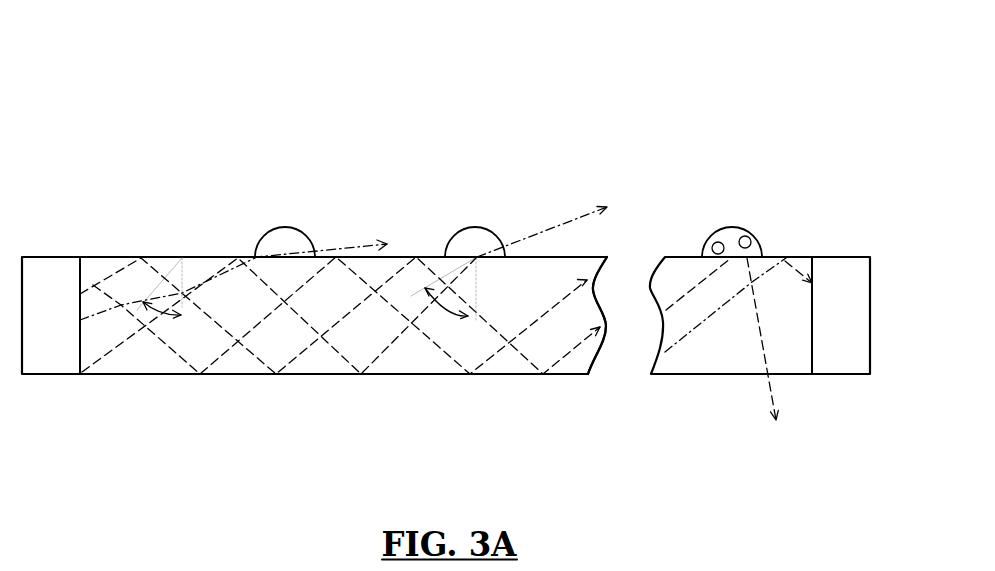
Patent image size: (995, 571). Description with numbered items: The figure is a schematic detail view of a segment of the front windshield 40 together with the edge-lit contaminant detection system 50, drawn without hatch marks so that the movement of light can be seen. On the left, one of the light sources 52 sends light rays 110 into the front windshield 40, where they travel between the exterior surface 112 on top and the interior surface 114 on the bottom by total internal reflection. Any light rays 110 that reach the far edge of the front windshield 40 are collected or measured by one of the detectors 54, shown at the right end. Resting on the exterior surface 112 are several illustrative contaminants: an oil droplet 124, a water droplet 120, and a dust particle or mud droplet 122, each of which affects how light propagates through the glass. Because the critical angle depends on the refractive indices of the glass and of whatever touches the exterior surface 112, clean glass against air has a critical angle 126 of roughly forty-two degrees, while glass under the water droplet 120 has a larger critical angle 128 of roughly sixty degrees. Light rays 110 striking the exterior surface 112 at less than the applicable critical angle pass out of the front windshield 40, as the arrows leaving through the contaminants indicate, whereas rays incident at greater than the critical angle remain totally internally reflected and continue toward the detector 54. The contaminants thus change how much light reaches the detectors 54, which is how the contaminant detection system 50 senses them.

The contaminant detection system 50 is at (95, 54).
The light source 52 is at (50, 275).
The detector 54 is at (847, 353).
The front windshield 40 is at (587, 368).
The light rays 110 is at (351, 246).
The exterior surface 112 is at (774, 257).
The interior surface 114 is at (132, 376).
The water droplet 120 is at (483, 228).
The dust particle or mud droplet 122 is at (717, 227).
The oil droplet 124 is at (280, 227).
The critical angle 126 is at (162, 315).
The critical angle 128 is at (445, 306).